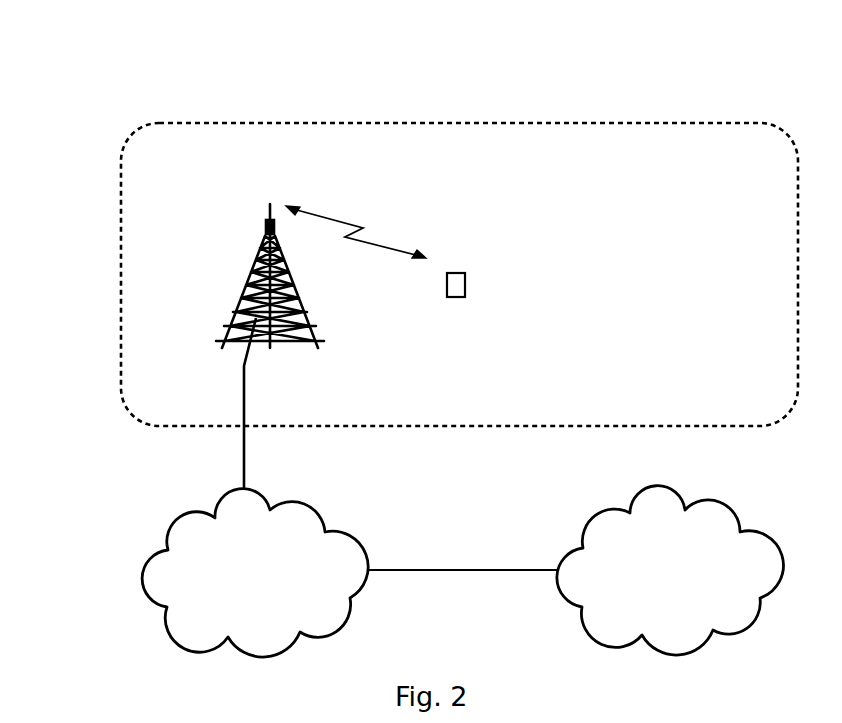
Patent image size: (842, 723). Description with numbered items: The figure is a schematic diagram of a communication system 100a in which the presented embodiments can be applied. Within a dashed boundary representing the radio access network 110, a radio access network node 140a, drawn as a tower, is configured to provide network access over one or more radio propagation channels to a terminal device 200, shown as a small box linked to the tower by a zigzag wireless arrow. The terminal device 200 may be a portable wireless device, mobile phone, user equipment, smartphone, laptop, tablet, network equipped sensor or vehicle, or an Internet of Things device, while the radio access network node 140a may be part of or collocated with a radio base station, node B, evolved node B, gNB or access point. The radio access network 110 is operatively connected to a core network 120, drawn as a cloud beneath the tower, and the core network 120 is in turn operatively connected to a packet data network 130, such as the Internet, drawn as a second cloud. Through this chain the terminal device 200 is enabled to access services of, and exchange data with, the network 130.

The communication system 100a is at (221, 53).
The radio access network 110 is at (122, 262).
The radio access network node 140a is at (264, 221).
The terminal device 200 is at (465, 286).
The core network 120 is at (270, 589).
The packet data network 130 is at (695, 589).